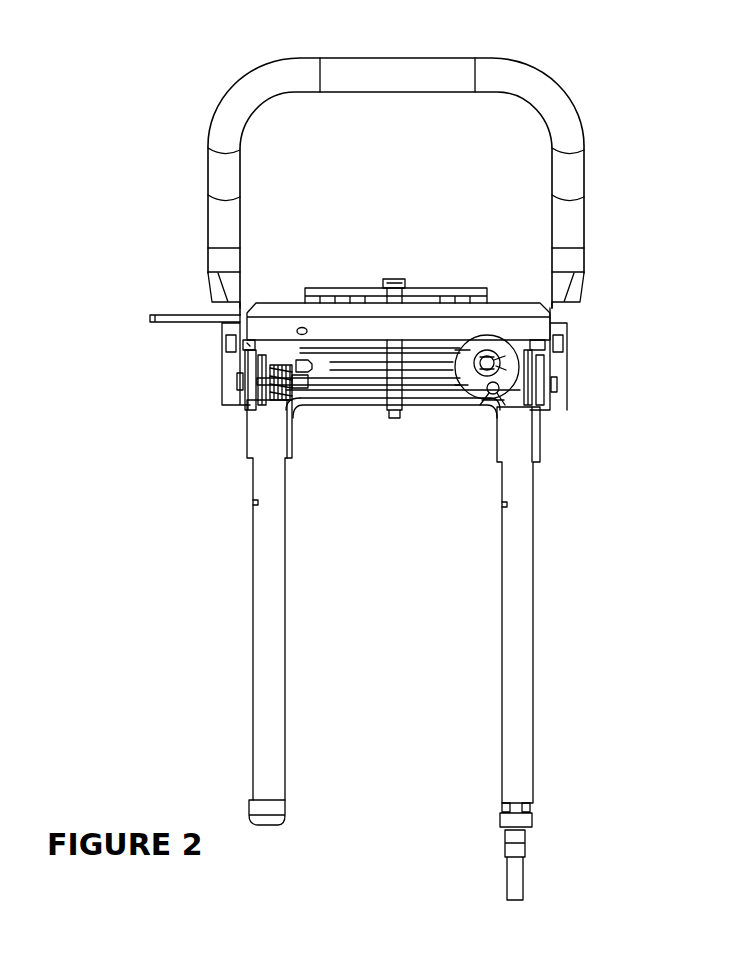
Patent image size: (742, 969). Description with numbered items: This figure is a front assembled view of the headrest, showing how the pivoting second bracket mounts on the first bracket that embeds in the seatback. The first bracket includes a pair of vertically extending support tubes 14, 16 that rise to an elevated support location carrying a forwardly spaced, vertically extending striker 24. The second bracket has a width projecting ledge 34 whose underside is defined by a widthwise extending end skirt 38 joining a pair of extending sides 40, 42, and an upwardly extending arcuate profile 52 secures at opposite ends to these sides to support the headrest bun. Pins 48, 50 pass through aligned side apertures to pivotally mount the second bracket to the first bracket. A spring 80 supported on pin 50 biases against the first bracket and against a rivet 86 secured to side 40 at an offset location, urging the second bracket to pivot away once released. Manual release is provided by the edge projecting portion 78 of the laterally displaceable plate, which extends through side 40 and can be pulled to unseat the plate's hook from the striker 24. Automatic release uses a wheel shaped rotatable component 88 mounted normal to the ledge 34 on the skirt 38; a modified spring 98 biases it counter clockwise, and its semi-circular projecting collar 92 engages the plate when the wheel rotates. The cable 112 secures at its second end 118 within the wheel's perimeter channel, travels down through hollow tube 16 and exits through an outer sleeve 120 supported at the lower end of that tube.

The arcuate profile 52 is at (208, 127).
The edge projecting portion 78 is at (185, 316).
The rivet 86 is at (247, 343).
The side 40 is at (227, 360).
The pin 50 is at (237, 387).
The spring 80 is at (263, 400).
The ledge 34 is at (280, 303).
The striker 24 is at (385, 380).
The end skirt 38 is at (480, 328).
The modified spring 98 is at (478, 352).
The rotatable component 88 is at (533, 342).
The side 42 is at (550, 360).
The pin 48 is at (555, 386).
The collar 92 is at (447, 393).
The second end 118 is at (477, 400).
The cable 112 is at (488, 400).
The support tube 14 is at (253, 628).
The support tube 16 is at (535, 530).
The outer sleeve 120 is at (507, 880).